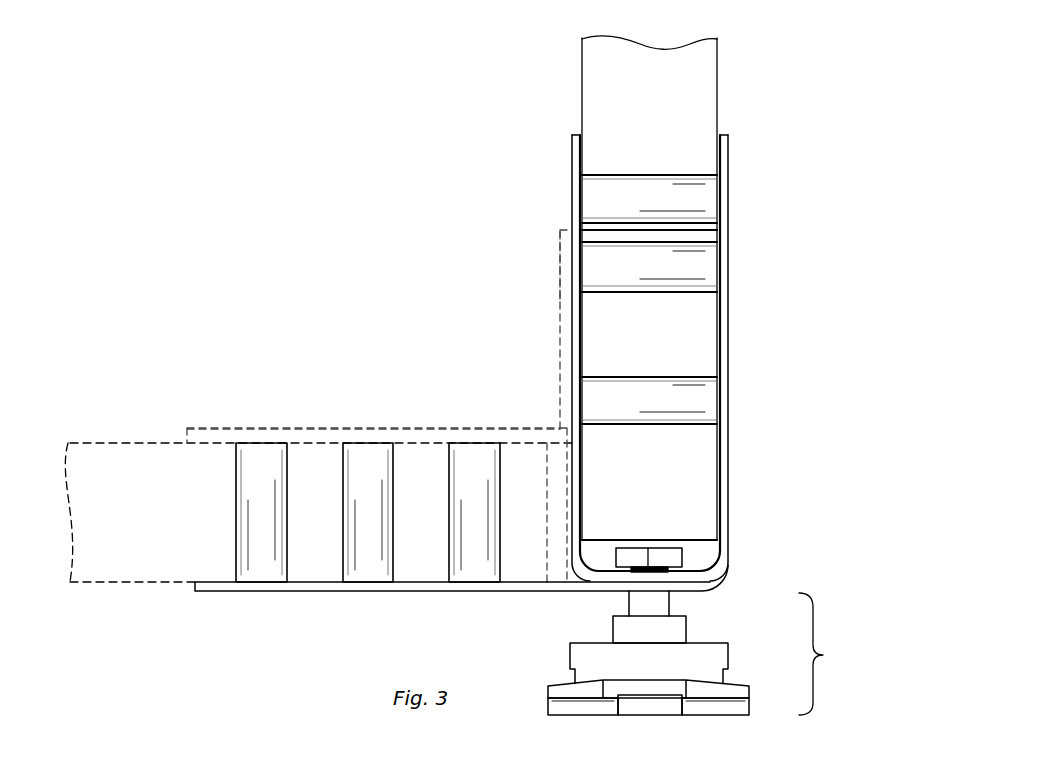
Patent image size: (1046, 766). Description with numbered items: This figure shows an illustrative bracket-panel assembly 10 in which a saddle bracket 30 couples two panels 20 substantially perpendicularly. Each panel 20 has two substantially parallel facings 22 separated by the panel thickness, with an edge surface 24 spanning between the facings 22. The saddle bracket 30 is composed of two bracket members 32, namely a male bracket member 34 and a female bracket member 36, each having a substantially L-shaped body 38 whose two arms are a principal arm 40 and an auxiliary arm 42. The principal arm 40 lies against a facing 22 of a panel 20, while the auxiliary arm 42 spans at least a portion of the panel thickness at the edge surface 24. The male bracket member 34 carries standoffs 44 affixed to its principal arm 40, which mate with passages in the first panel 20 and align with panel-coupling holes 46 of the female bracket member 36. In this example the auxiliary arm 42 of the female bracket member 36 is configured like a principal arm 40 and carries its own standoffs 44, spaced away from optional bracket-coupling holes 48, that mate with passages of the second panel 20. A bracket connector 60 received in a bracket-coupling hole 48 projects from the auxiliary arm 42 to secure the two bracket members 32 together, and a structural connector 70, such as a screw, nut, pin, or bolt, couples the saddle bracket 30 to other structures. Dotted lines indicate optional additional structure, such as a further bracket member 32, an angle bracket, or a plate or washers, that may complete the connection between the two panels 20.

The assembly 10 is at (234, 181).
The panel 20 is at (728, 50).
The facing 22 is at (582, 66).
The edge surface 24 is at (682, 100).
The saddle bracket 30 is at (734, 337).
The bracket member 32 is at (567, 322).
The male bracket member 34 is at (562, 292).
The female bracket member 36 is at (385, 428).
The body 38 is at (475, 428).
The principal arm 40 is at (572, 152).
The auxiliary arm 42 is at (222, 593).
The standoff 44 is at (614, 175).
The panel-coupling hole 46 is at (728, 207).
The bracket-coupling hole 48 is at (650, 576).
The bracket connector 60 is at (683, 557).
The structural connector 70 is at (823, 655).